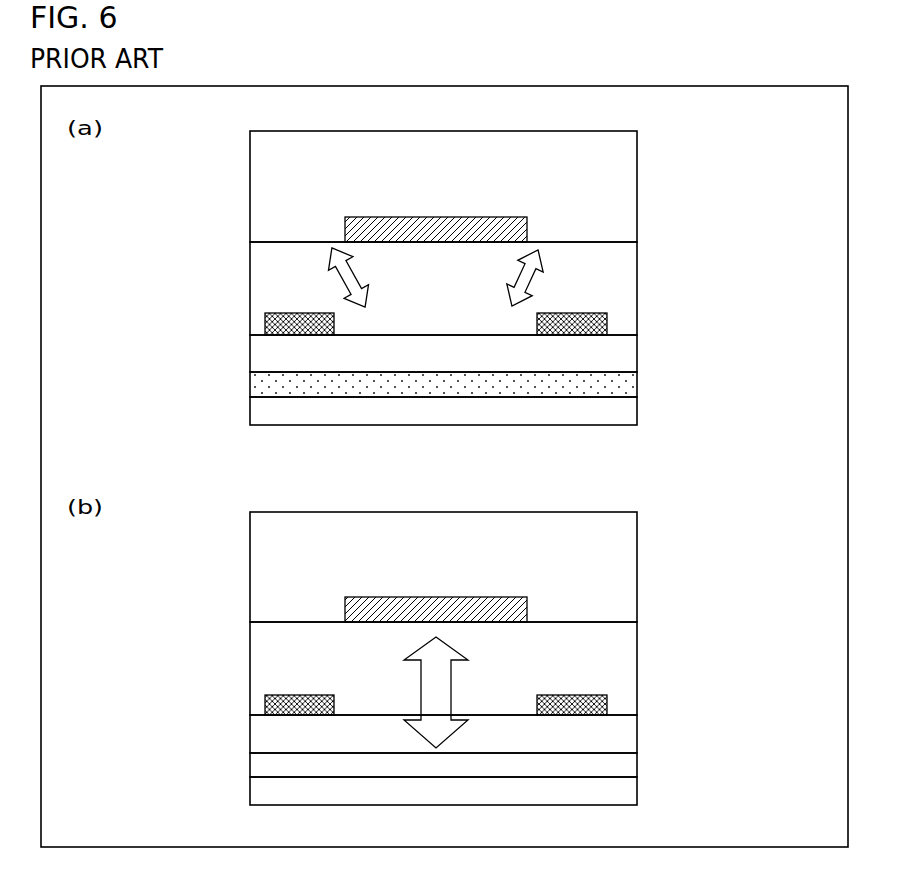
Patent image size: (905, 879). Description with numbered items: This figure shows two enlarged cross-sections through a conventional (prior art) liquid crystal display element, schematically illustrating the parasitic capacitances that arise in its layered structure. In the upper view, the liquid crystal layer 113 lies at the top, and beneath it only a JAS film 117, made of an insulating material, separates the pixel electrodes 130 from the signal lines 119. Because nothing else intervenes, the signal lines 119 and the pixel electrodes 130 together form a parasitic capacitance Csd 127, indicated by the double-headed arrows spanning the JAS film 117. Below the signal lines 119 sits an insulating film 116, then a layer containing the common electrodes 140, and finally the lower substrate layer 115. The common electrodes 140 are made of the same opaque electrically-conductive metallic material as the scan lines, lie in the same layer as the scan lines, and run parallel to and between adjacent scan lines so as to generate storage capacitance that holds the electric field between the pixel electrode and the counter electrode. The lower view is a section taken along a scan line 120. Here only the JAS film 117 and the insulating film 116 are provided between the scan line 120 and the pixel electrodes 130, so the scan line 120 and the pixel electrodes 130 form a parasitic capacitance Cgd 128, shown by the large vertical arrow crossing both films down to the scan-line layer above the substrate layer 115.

The liquid crystal layer 113 is at (630, 186).
The substrate 115 is at (630, 413).
The insulating film 116 is at (630, 356).
The JAS film 117 is at (630, 290).
The signal lines 119 is at (266, 322).
The scan lines 120 is at (630, 766).
The parasitic capacitance Csd 127 is at (527, 278).
The parasitic capacitance Cgd 128 is at (445, 686).
The pixel electrodes 130 is at (436, 214).
The common electrodes 140 is at (630, 388).